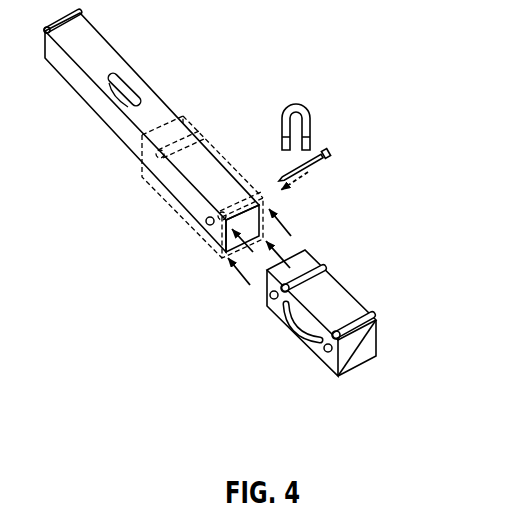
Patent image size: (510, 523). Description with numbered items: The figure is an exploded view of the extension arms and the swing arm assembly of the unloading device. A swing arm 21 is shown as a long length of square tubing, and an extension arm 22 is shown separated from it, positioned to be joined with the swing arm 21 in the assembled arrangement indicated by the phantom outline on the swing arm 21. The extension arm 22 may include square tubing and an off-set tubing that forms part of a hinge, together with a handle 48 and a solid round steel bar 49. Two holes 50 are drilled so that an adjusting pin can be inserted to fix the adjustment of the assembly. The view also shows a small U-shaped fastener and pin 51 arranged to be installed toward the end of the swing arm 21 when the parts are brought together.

The swing arm 21 is at (89, 43).
The extension arm 22 is at (349, 265).
The handle 48 is at (292, 331).
The solid round steel bar 49 is at (326, 267).
The holes 50 is at (209, 226).
The U-bolt and pin 51 is at (322, 136).